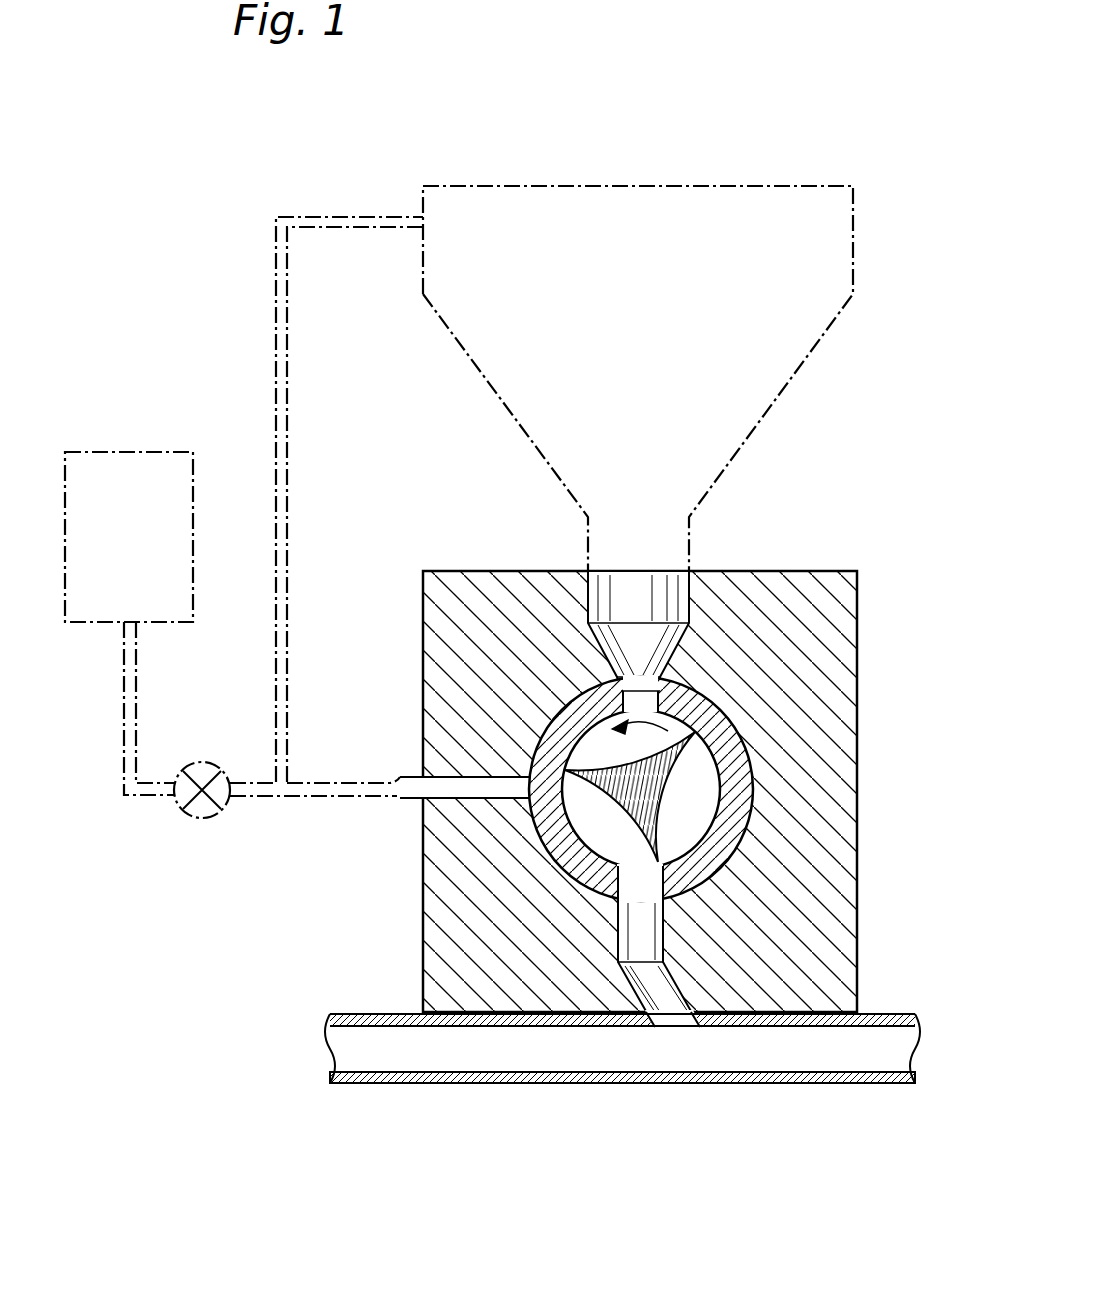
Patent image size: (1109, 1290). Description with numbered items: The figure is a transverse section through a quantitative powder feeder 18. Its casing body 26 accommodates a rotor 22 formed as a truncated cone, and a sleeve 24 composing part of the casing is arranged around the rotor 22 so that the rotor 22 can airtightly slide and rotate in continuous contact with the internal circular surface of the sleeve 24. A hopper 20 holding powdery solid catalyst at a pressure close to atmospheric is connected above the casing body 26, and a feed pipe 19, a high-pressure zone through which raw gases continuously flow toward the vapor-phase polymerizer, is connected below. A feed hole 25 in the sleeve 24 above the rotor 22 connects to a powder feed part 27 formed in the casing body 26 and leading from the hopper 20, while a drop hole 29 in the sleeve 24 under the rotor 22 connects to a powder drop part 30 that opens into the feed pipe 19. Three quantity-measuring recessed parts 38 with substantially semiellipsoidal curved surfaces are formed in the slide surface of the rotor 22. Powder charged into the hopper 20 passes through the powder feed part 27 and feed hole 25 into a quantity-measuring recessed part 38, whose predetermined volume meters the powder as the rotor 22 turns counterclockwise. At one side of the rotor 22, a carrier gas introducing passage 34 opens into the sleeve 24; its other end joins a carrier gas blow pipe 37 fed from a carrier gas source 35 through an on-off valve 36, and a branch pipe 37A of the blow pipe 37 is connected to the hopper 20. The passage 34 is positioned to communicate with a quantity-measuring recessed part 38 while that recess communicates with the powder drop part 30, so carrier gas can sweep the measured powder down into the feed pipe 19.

The quantitative powder feeder 18 is at (838, 520).
The feed pipe 19 is at (595, 1050).
The hopper 20 is at (645, 186).
The rotor 22 is at (745, 735).
The sleeve 24 is at (697, 731).
The feed hole 25 is at (614, 698).
The casing body 26 is at (782, 592).
The powder feed part 27 is at (640, 597).
The drop hole 29 is at (653, 882).
The powder drop part 30 is at (633, 923).
The carrier gas introducing passage 34 is at (497, 772).
The carrier gas source 35 is at (130, 452).
The on-off valve 36 is at (203, 820).
The carrier gas blow pipe 37 is at (395, 800).
The branch pipe 37A is at (289, 400).
The quantity-measuring recessed part 38 is at (600, 740).